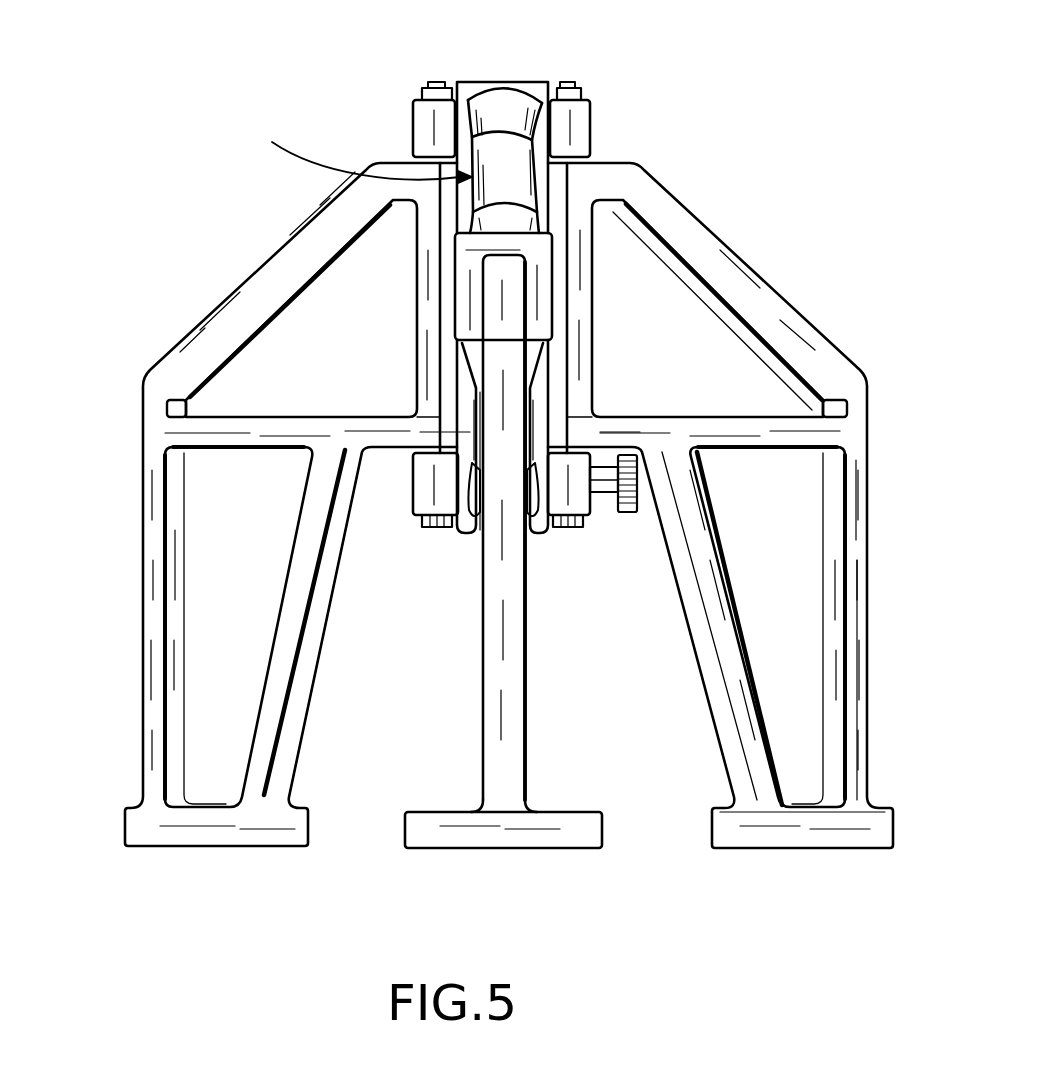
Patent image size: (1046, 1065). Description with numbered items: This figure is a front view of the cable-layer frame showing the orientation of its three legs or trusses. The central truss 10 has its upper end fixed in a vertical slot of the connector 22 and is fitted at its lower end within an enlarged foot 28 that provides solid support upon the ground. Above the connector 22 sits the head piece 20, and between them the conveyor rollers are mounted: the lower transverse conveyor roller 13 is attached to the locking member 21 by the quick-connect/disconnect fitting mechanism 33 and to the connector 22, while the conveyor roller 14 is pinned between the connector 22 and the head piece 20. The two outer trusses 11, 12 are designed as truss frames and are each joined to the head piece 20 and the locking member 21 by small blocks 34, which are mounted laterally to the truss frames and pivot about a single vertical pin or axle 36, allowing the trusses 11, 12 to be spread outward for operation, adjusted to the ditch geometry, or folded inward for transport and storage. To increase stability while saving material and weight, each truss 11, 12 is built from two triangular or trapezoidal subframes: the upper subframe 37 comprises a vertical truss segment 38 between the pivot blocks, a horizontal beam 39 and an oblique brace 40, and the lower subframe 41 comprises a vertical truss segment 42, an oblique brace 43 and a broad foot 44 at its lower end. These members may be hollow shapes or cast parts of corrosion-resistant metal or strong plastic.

The truss 10 is at (498, 677).
The truss 11 is at (128, 682).
The truss 12 is at (886, 628).
The lower transverse conveyor roller 13 is at (466, 410).
The conveyor roller 14 is at (357, 146).
The head piece 20 is at (515, 85).
The locking member 21 is at (574, 497).
The connector 22 is at (452, 273).
The enlarged foot 28 is at (545, 833).
The quick-connect/disconnect fitting mechanism 33 is at (630, 515).
The small block 34 is at (572, 141).
The pivot pin or axle 36 is at (578, 90).
The upper subframe 37 is at (769, 274).
The vertical truss segment 38 is at (578, 339).
The horizontal beam 39 is at (715, 430).
The oblique brace 40 is at (807, 337).
The lower subframe 41 is at (694, 707).
The vertical truss segment 42 is at (858, 745).
The oblique brace 43 is at (722, 607).
The broad foot 44 is at (806, 848).